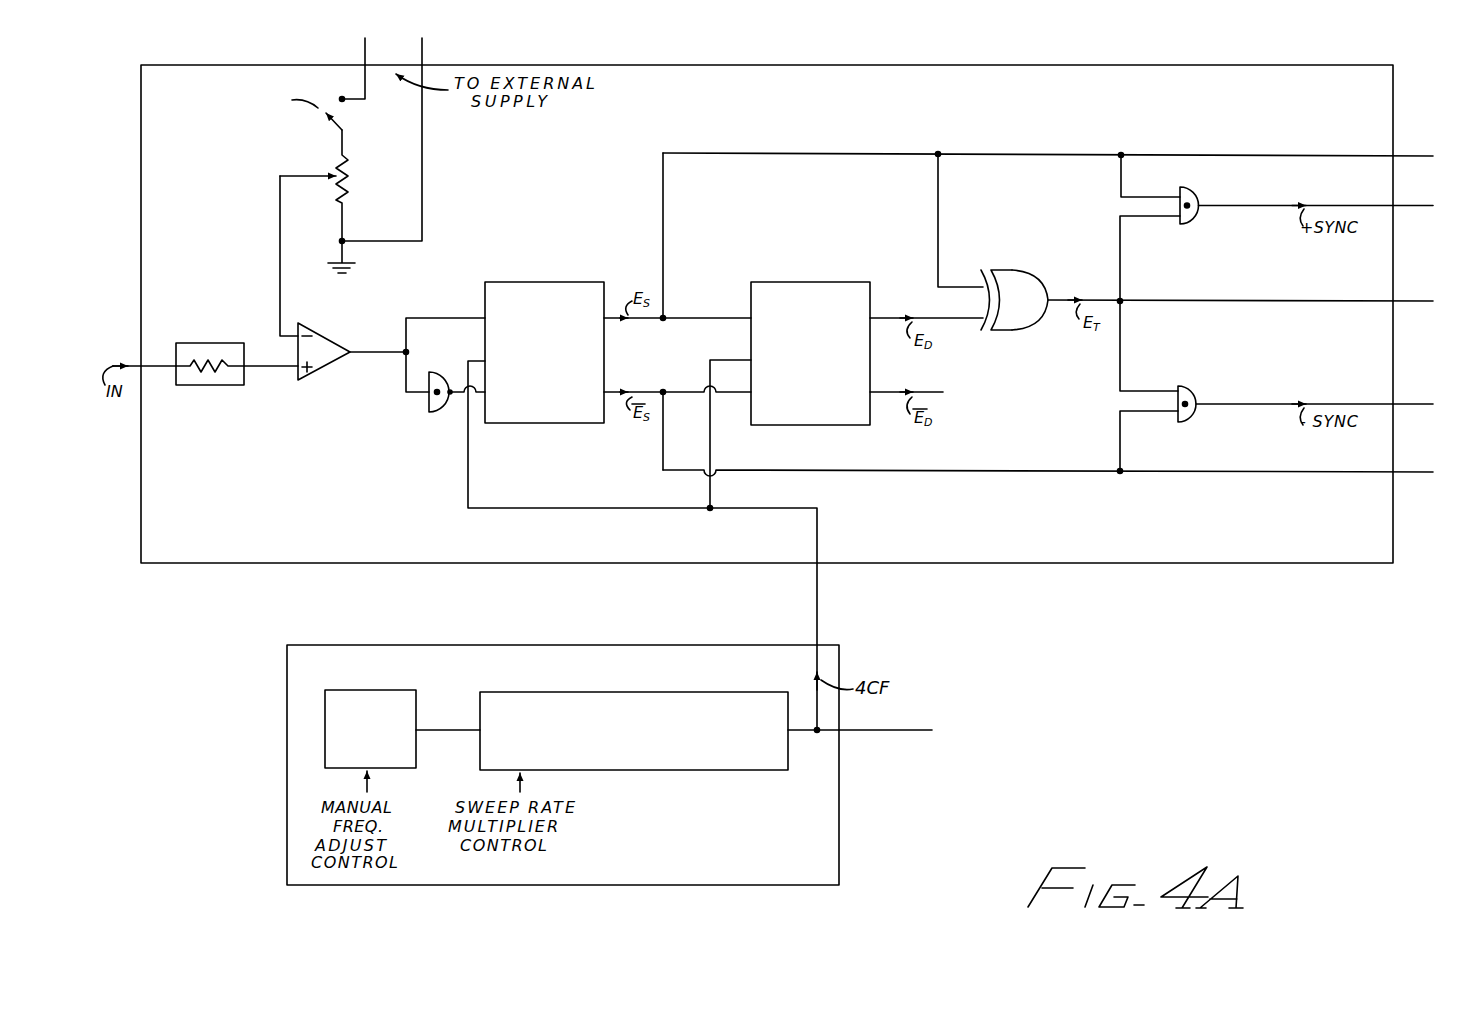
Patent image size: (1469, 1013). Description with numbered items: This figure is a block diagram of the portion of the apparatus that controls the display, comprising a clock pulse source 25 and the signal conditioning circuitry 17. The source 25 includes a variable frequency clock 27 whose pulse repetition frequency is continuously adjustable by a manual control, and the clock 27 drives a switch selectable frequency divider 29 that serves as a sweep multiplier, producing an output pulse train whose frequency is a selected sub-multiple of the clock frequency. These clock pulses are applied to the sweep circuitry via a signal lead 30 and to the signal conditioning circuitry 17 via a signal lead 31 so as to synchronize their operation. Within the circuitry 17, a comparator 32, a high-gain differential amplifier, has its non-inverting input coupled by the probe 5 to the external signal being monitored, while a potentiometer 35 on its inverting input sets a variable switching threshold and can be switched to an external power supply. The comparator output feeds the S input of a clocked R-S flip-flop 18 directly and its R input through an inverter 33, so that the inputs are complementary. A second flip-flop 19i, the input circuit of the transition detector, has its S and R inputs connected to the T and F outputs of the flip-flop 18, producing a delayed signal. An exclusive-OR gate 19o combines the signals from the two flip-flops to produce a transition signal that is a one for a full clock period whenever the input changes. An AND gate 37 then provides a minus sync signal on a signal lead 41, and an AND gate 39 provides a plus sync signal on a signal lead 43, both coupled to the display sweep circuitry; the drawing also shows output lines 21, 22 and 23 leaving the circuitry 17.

The probe 5 is at (207, 386).
The signal conditioning circuitry 17 is at (195, 540).
The flip-flop 18 is at (543, 282).
The flip-flop 19i is at (815, 282).
The exclusive-OR gate 19o is at (1028, 270).
The first output line 21 is at (1422, 156).
The second output line 22 is at (1422, 472).
The transition output line 23 is at (1422, 301).
The clock pulse source 25 is at (287, 706).
The variable frequency clock 27 is at (360, 690).
The switch selectable frequency divider 29 is at (599, 692).
The signal lead 30 is at (817, 612).
The signal lead 31 is at (897, 732).
The comparator circuit 32 is at (318, 369).
The inverter 33 is at (434, 411).
The potentiometer 35 is at (330, 163).
The AND gate 37 is at (1191, 386).
The AND gate 39 is at (1193, 188).
The signal lead 41 is at (1422, 404).
The signal lead 43 is at (1422, 206).